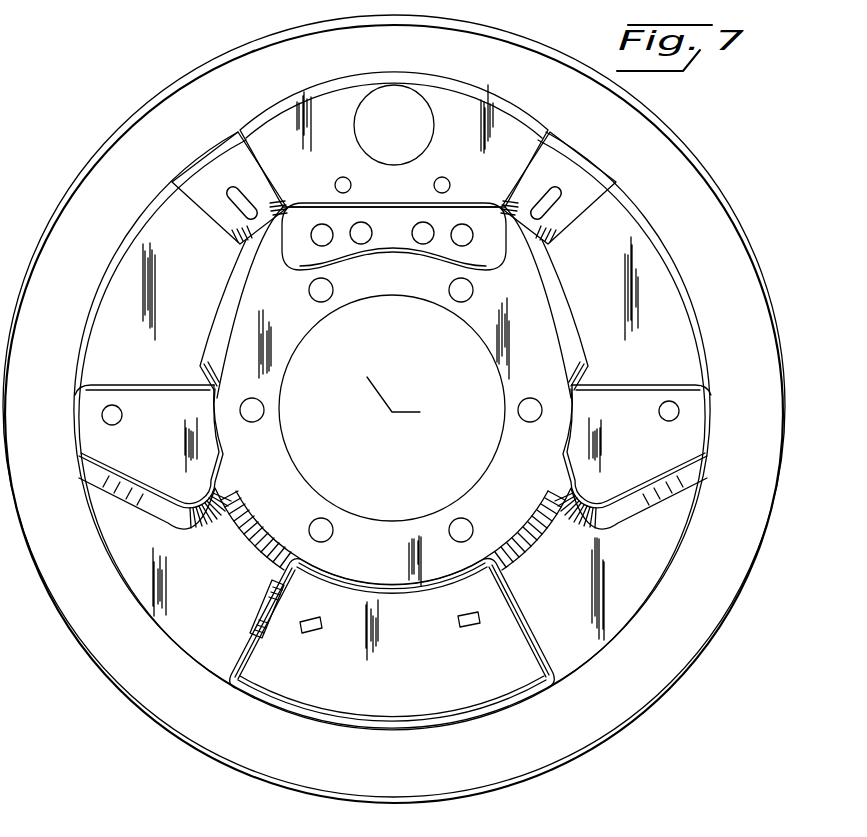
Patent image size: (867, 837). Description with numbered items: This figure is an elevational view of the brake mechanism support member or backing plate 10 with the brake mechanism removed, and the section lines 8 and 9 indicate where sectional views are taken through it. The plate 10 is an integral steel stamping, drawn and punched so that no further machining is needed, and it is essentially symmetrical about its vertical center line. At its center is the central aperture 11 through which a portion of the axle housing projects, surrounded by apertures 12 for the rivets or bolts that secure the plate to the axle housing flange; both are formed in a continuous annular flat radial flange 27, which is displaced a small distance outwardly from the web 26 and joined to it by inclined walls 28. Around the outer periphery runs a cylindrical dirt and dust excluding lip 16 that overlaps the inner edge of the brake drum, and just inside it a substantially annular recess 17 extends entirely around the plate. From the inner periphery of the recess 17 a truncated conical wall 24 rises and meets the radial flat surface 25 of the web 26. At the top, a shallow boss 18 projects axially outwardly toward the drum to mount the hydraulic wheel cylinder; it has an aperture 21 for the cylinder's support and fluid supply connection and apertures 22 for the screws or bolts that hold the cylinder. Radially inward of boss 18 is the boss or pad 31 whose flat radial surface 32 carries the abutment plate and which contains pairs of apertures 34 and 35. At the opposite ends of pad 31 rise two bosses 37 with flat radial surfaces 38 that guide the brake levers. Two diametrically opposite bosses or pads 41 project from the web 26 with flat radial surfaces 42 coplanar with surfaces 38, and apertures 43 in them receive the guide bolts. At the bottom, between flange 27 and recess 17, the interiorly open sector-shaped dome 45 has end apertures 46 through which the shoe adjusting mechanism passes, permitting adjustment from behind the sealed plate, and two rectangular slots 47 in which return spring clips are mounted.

The section line 8- 8 is at (393, 8).
The section line 9- 9 is at (160, 87).
The brake mechanism support member or backing plate 10 is at (456, 472).
The central aperture 11 is at (302, 490).
The apertures 12 is at (262, 411).
The dirt and dust excluding lip 16 is at (697, 658).
The annular recess 17 is at (717, 597).
The shallow boss 18 is at (517, 115).
The aperture 21 is at (420, 107).
The apertures 22 is at (434, 184).
The truncated conical wall 24 is at (622, 623).
The radial flat surface 25 is at (190, 295).
The web 26 is at (183, 600).
The annular flat radial flange 27 is at (374, 532).
The inclined walls 28 is at (560, 340).
The boss or pad 31 is at (338, 250).
The flat radial surface 32 is at (391, 230).
The apertures 34 is at (423, 237).
The apertures 35 is at (322, 224).
The bosses 37 is at (217, 210).
The flat radial surfaces 38 is at (237, 192).
The bosses or pads 41 is at (185, 459).
The flat radial surfaces 42 is at (160, 449).
The apertures 43 is at (121, 412).
The sector-shaped boss or dome 45 is at (376, 652).
The end apertures 46 is at (268, 598).
The rectangular slots 47 is at (312, 628).